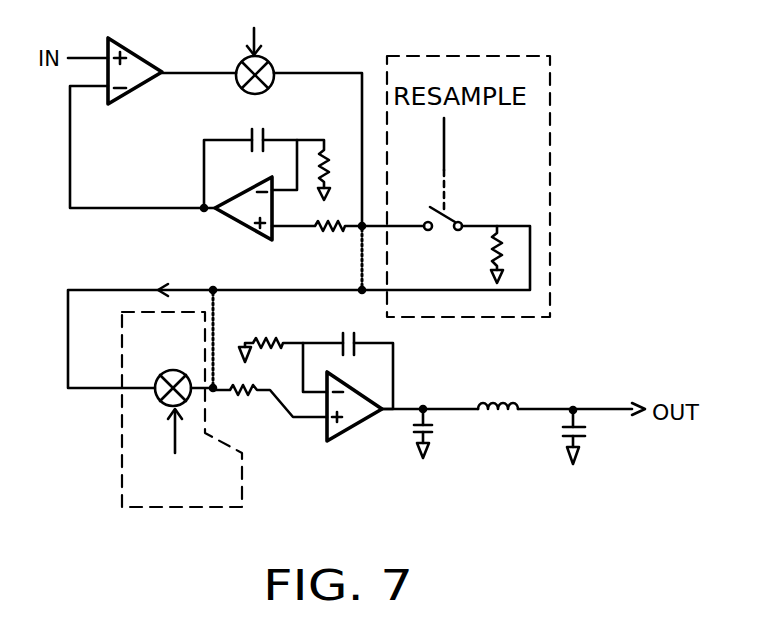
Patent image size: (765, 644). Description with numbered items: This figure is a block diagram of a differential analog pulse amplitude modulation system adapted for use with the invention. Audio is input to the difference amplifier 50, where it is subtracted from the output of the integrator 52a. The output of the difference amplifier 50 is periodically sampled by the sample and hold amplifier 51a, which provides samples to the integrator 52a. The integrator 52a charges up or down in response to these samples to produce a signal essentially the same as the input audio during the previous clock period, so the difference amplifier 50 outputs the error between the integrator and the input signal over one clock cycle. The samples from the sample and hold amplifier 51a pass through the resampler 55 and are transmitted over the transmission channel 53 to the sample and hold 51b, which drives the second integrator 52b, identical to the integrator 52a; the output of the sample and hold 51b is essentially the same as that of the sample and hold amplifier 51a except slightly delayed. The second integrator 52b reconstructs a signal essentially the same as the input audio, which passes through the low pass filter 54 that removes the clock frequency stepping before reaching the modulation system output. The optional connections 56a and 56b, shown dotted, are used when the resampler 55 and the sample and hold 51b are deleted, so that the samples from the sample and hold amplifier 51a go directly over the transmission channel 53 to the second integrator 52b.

The difference amplifier 50 is at (137, 49).
The sample and hold amplifier 51a is at (266, 60).
The sample and hold 51b is at (175, 363).
The integrator 52a is at (232, 229).
The second integrator 52b is at (354, 430).
The transmission channel 53 is at (337, 300).
The low pass filter 54 is at (475, 394).
The resampler 55 is at (497, 224).
The optional connection 56a is at (366, 256).
The optional connection 56b is at (220, 326).